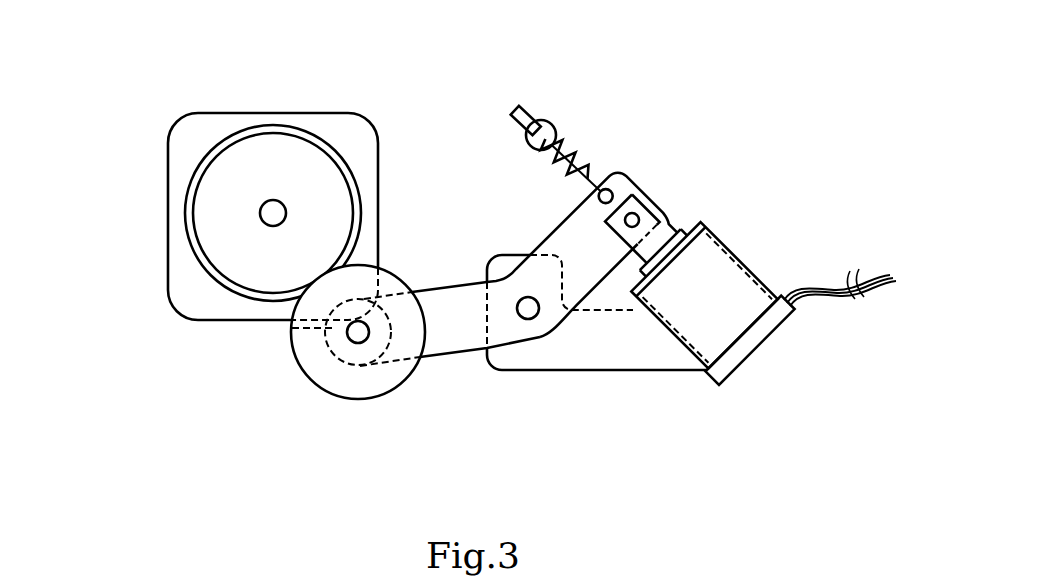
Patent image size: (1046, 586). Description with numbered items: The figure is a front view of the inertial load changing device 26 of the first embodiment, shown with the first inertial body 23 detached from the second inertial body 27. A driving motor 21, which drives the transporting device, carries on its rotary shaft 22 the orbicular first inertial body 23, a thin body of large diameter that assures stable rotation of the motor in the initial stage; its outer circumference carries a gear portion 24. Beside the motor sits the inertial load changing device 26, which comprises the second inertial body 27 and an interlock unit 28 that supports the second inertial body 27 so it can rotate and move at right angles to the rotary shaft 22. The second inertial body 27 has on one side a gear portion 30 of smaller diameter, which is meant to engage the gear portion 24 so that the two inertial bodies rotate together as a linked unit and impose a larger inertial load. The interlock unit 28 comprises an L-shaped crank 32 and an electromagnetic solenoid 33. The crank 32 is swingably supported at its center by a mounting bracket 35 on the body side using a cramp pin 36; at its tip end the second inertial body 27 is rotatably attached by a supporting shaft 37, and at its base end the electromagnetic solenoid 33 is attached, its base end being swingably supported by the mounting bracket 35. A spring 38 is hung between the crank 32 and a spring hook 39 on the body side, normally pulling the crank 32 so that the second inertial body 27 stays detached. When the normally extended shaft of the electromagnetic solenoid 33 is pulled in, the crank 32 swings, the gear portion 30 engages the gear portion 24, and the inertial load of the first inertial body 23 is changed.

The driving motor 21 is at (363, 114).
The rotary shaft 22 is at (258, 213).
The first inertial body 23 is at (240, 168).
The gear portion 24 is at (195, 177).
The inertial load changing device 26 is at (734, 49).
The second inertial body 27 is at (298, 375).
The interlock unit 28 is at (770, 232).
The gear portion 30 is at (300, 330).
The crank 32 is at (643, 180).
The electromagnetic solenoid 33 is at (765, 352).
The mounting bracket 35 is at (537, 372).
The cramp pin 36 is at (535, 319).
The supporting shaft 37 is at (361, 344).
The spring 38 is at (548, 121).
The spring hook 39 is at (522, 110).